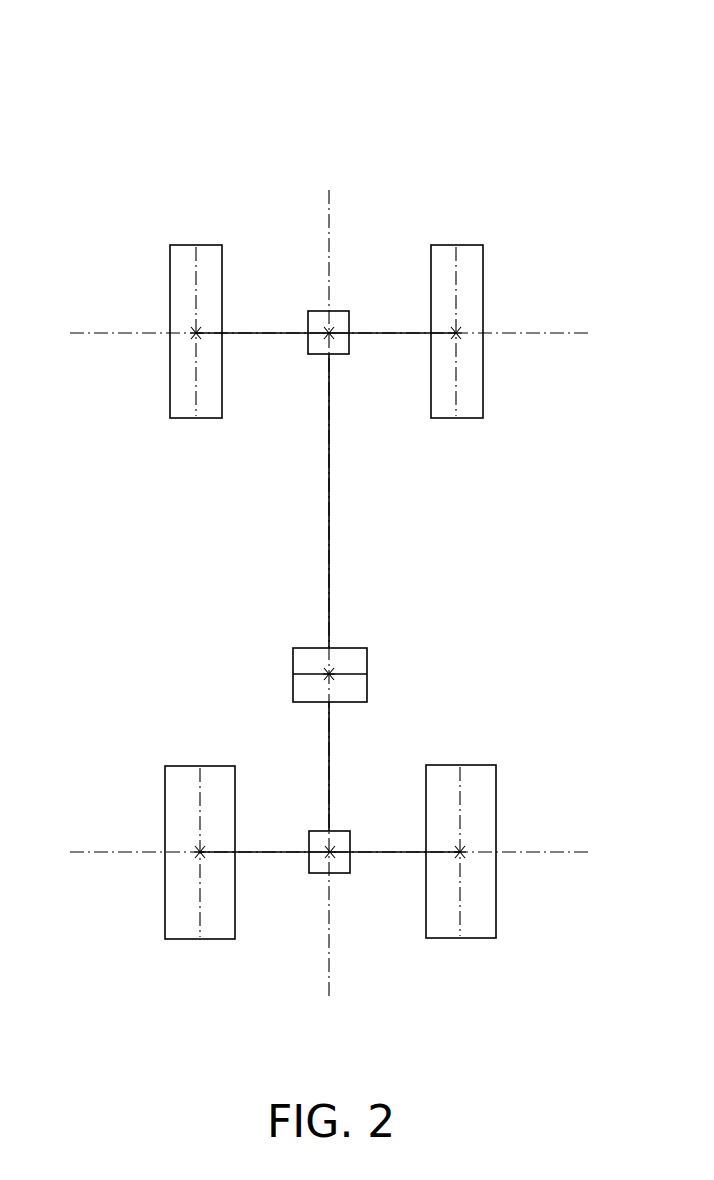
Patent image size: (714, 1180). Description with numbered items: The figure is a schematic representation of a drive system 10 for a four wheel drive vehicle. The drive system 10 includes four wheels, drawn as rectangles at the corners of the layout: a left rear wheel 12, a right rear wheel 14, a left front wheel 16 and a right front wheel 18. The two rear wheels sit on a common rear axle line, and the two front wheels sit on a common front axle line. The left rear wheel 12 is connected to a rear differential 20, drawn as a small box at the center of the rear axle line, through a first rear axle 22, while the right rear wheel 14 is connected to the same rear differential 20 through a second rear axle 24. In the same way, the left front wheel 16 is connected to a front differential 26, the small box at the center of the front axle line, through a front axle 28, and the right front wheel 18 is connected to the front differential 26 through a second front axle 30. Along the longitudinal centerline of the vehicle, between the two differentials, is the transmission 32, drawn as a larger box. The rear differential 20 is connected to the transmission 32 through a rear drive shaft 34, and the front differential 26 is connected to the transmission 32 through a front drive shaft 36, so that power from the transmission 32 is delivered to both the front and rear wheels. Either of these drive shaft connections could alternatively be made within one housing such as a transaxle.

The drive system 10 is at (412, 100).
The left rear wheel 12 is at (165, 790).
The right rear wheel 14 is at (496, 797).
The left front wheel 16 is at (170, 280).
The right front wheel 18 is at (483, 283).
The rear differential 20 is at (313, 875).
The first rear axle 22 is at (260, 855).
The second rear axle 24 is at (382, 855).
The front differential 26 is at (340, 311).
The front axle 28 is at (260, 333).
The second front axle 30 is at (397, 333).
The transmission 32 is at (367, 658).
The rear drive shaft 34 is at (332, 753).
The front drive shaft 36 is at (329, 538).